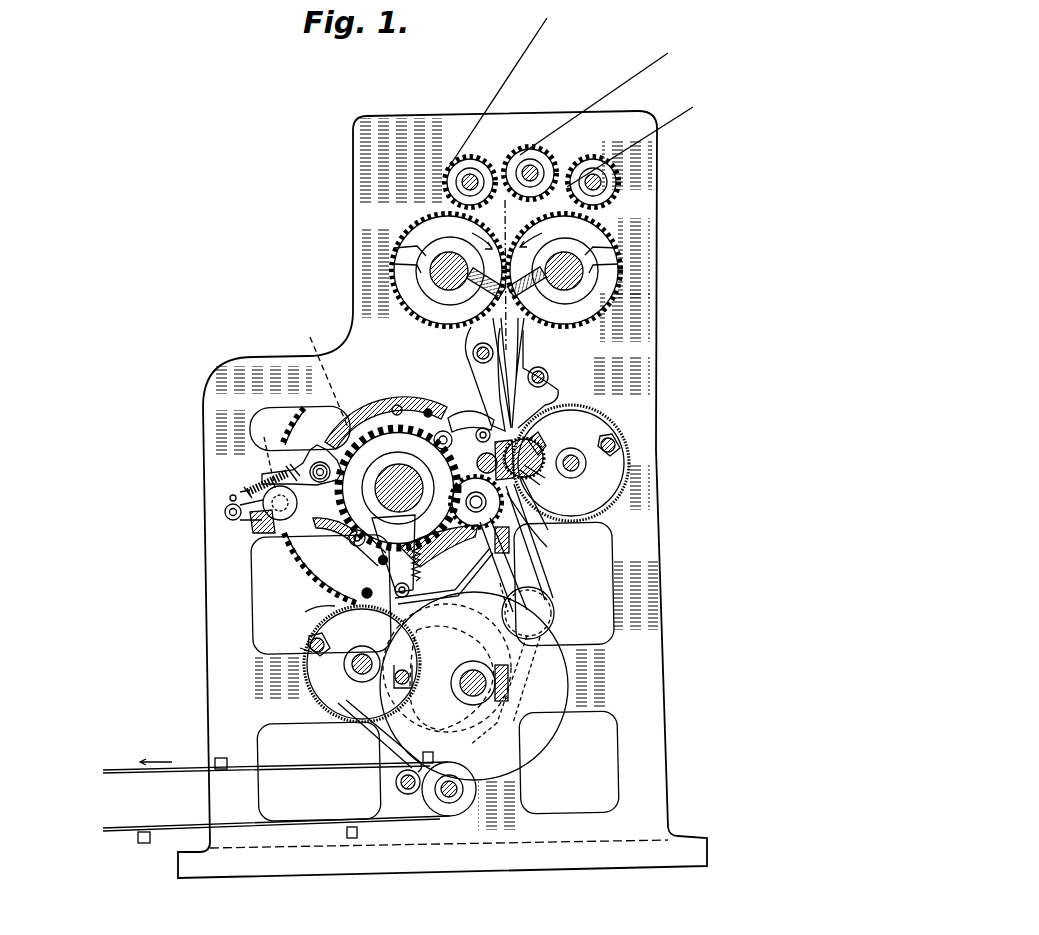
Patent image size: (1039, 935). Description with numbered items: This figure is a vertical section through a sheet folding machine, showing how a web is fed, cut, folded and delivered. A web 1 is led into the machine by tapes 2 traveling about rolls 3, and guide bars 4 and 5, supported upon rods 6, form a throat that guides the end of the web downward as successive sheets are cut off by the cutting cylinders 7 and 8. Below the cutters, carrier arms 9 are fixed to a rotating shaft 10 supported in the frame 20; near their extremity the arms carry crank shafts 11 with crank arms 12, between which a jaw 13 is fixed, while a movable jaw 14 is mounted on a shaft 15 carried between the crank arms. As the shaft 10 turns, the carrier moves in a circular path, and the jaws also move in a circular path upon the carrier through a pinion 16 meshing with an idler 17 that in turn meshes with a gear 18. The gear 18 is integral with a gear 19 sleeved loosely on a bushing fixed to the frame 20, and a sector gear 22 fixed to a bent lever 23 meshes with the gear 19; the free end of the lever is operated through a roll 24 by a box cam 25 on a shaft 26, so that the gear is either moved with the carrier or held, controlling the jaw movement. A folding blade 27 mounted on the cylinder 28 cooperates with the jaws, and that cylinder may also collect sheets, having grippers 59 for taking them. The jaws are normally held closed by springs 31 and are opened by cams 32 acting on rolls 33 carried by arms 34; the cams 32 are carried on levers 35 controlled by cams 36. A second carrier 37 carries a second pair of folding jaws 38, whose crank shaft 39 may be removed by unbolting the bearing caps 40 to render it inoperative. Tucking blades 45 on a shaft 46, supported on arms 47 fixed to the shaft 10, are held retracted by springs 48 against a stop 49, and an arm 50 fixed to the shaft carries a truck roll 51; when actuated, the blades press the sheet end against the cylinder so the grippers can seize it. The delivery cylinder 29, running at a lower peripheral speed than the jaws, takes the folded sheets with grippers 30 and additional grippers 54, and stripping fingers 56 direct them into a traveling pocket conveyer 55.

The web 1 is at (505, 221).
The tapes 2 is at (517, 67).
The rolls 3 is at (450, 173).
The guide bar 4 is at (526, 352).
The guide bar 5 is at (500, 370).
The rods 6 is at (474, 351).
The cutting cylinder 7 is at (417, 230).
The cutting cylinder 8 is at (593, 233).
The carrier arms 9 is at (417, 427).
The rotating shaft 10 is at (381, 410).
The crank shafts 11 is at (550, 518).
The crank arms 12 is at (286, 540).
The jaw 13 is at (484, 427).
The movable jaw 14 is at (485, 478).
The shaft 15 is at (477, 465).
The pinion 16 is at (526, 540).
The idler 17 is at (503, 565).
The gear 18 is at (398, 439).
The gear 19 is at (322, 376).
The frame 20 is at (662, 590).
The sector gear 22 is at (452, 555).
The bent lever 23 is at (537, 652).
The roll 24 is at (497, 690).
The box cam 25 is at (497, 723).
The shaft 26 is at (473, 700).
The folding blade 27 is at (528, 476).
The cylinder 28 is at (608, 415).
The cylinder 29 is at (305, 684).
The grippers 30 is at (312, 632).
The springs 31 is at (262, 485).
The cams 32 is at (462, 395).
The rolls 33 is at (462, 420).
The arms 34 is at (243, 530).
The levers 35 is at (428, 409).
The cams 36 is at (360, 418).
The second carrier 37 is at (327, 444).
The second pair of folding jaws 38 is at (243, 492).
The crank shaft 39 is at (262, 453).
The bearing caps 40 is at (230, 498).
The tucking blades 45 is at (440, 592).
The shaft 46 is at (396, 596).
The arms 47 is at (397, 530).
The springs 48 is at (421, 567).
The stop 49 is at (407, 596).
The arm 50 is at (380, 596).
The truck roll 51 is at (342, 602).
The grippers 54 is at (436, 722).
The traveling pocket conveyer 55 is at (323, 769).
The stripping fingers 56 is at (357, 733).
The grippers 59 is at (620, 450).